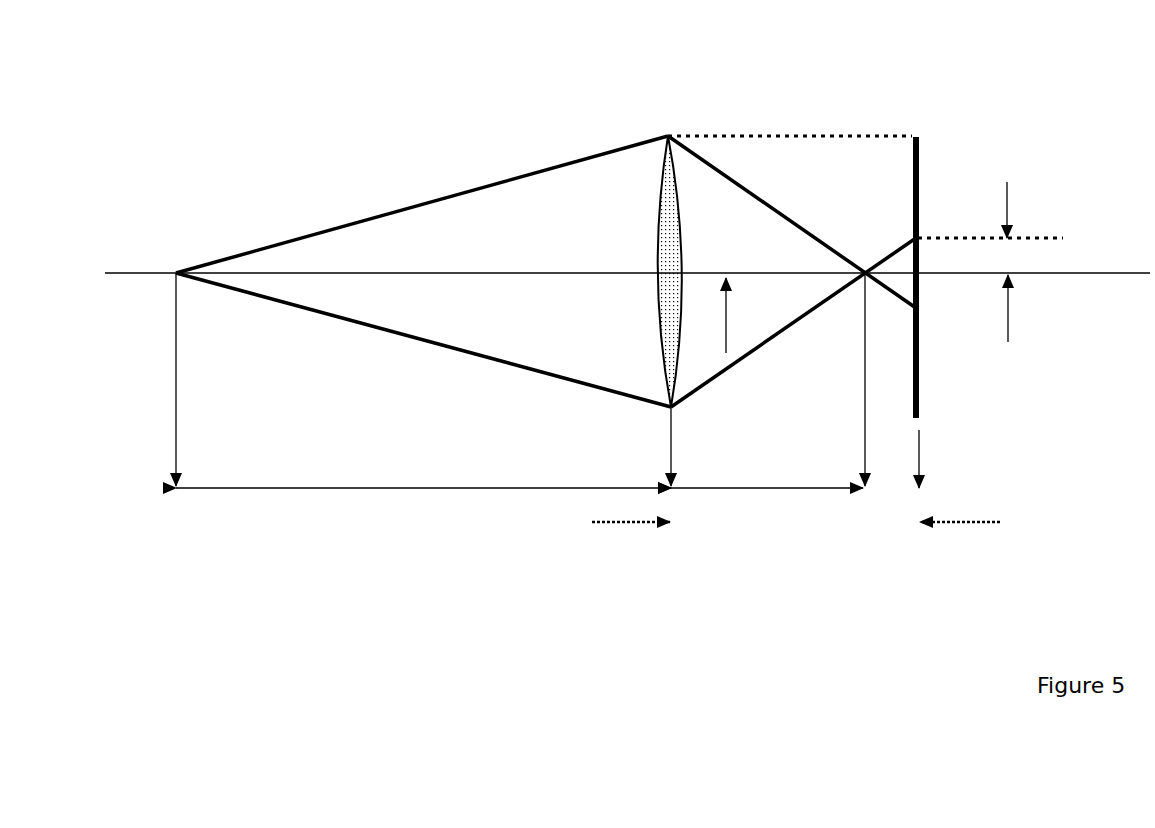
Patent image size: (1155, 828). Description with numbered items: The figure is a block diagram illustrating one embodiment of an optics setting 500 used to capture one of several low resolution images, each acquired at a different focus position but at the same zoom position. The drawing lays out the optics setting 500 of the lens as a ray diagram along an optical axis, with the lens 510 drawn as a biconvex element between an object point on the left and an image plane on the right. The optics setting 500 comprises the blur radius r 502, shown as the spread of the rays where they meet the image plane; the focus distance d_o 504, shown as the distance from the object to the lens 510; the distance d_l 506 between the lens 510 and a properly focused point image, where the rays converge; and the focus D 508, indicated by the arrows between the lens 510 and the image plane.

The optics setting 500 is at (965, 150).
The blur radius 502 is at (1071, 213).
The focus distance 504 is at (425, 473).
The distance between lens and properly focused point image 506 is at (776, 474).
The focus 508 is at (821, 568).
The lens 510 is at (653, 217).